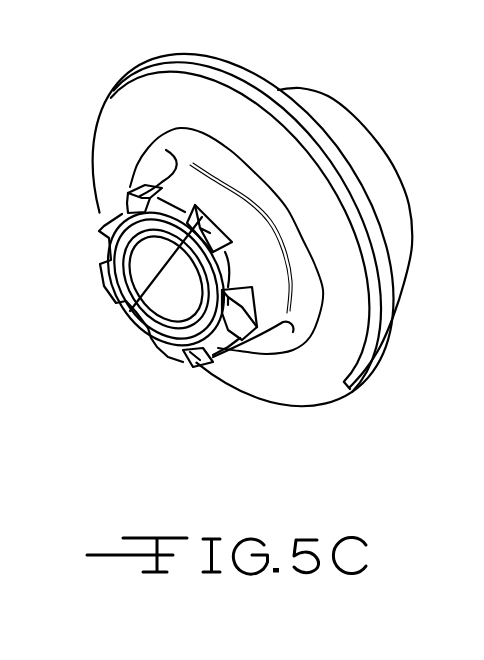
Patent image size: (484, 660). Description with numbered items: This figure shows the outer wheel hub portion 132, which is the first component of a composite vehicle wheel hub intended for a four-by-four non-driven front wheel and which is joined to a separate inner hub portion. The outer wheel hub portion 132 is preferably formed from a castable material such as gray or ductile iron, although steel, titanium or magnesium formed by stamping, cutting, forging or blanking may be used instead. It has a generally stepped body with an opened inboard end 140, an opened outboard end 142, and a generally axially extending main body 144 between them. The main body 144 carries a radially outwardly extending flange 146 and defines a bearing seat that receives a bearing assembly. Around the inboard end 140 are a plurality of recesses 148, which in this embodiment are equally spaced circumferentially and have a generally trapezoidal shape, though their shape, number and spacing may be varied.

The outer wheel hub portion 132 is at (390, 121).
The inboard end 140 is at (155, 347).
The outboard end 142 is at (408, 211).
The main body 144 is at (130, 113).
The flange 146 is at (333, 358).
The recesses 148 is at (165, 185).